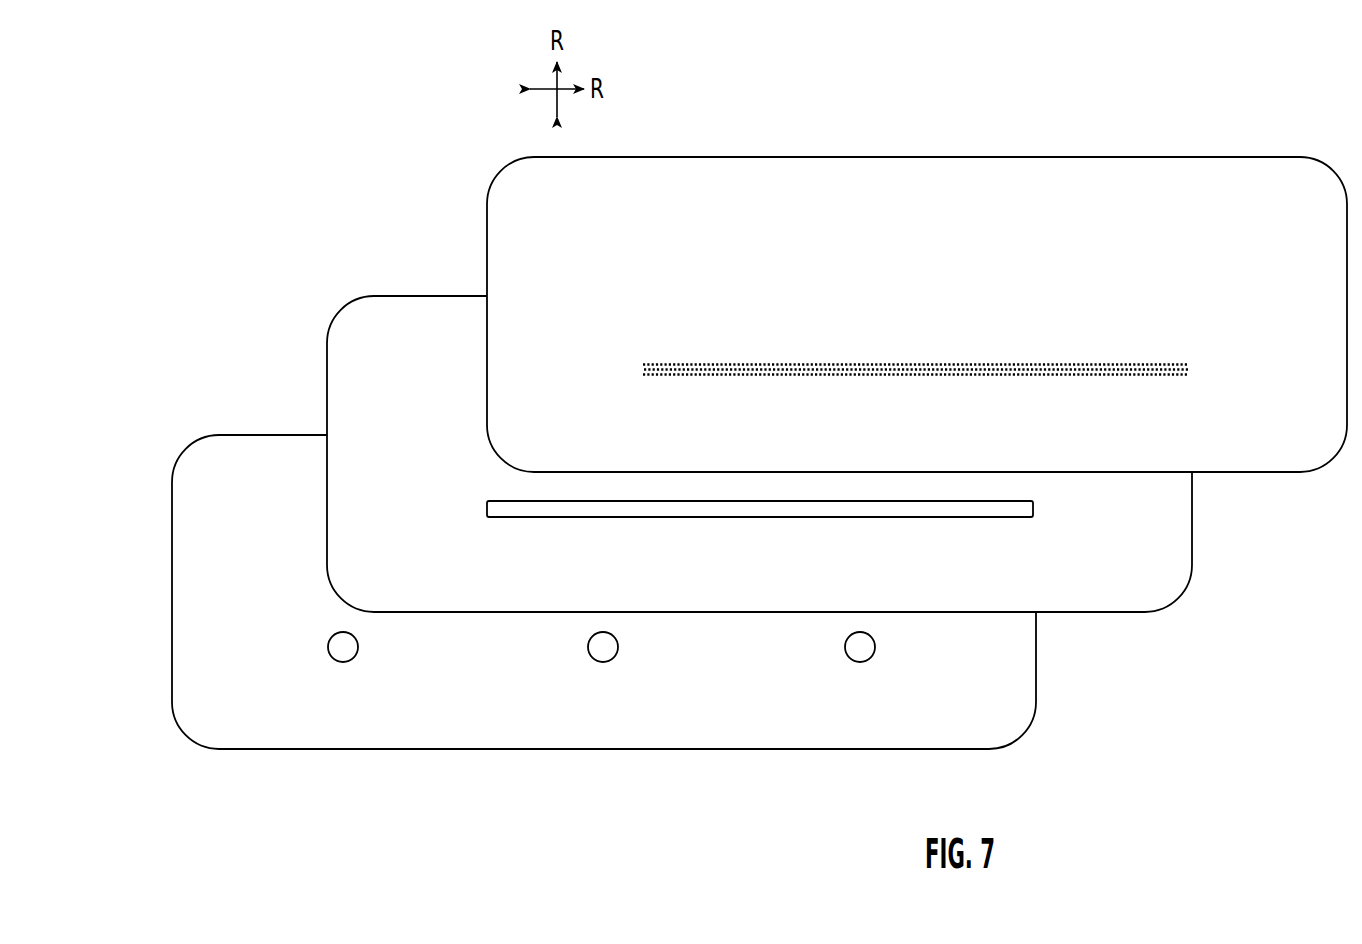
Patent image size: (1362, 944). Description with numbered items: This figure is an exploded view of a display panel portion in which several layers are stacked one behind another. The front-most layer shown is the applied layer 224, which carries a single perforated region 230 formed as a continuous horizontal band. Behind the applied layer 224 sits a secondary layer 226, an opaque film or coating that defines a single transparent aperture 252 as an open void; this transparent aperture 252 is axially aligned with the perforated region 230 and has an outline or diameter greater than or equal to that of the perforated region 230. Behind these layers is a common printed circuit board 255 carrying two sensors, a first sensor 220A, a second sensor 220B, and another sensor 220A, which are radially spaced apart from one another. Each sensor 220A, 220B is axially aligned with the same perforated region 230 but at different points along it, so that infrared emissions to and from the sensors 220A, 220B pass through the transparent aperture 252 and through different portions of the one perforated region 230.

The applied layer 224 is at (1031, 157).
The secondary layer 226 is at (400, 296).
The perforated region 230 is at (914, 365).
The transparent aperture 252 is at (486, 508).
The printed circuit board 255 is at (247, 513).
The sensor 220A is at (341, 665).
The sensor 220B is at (601, 665).